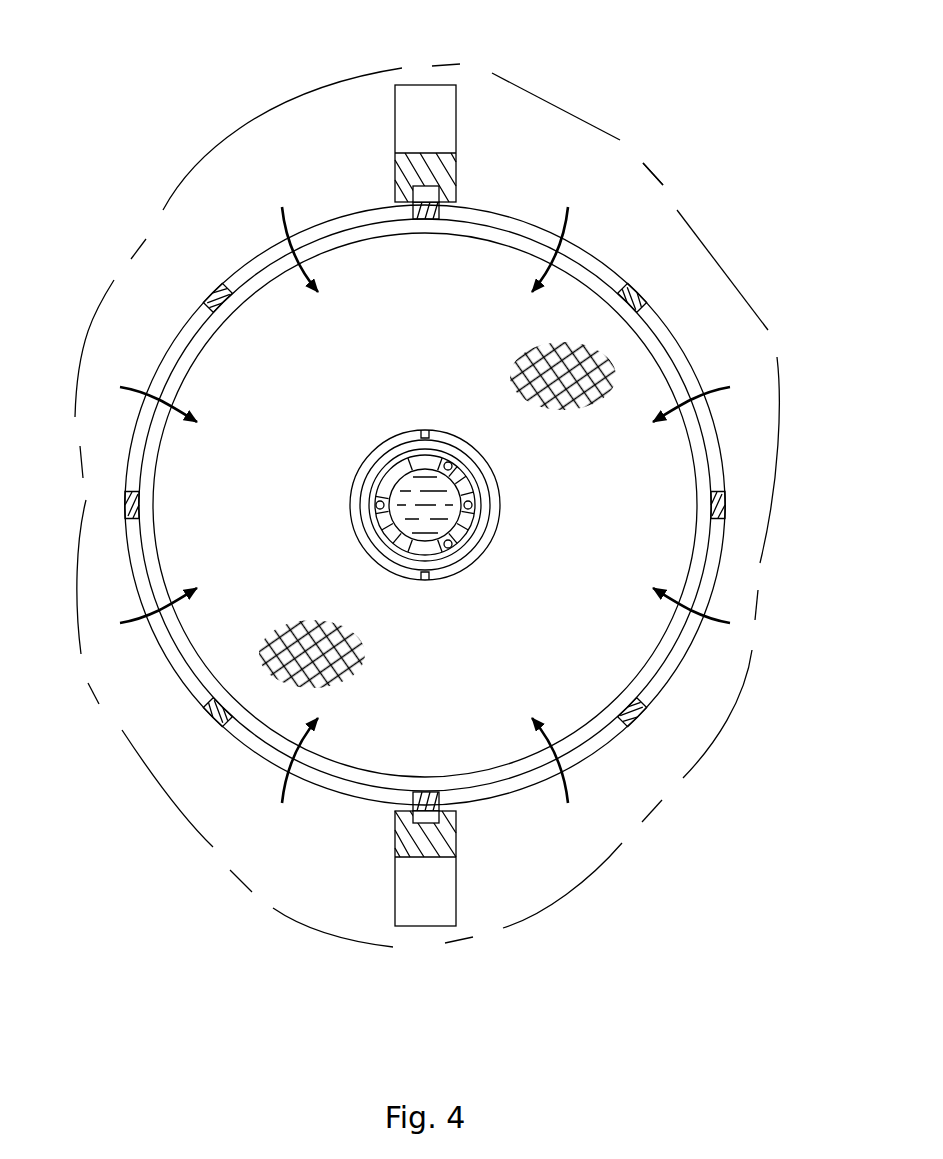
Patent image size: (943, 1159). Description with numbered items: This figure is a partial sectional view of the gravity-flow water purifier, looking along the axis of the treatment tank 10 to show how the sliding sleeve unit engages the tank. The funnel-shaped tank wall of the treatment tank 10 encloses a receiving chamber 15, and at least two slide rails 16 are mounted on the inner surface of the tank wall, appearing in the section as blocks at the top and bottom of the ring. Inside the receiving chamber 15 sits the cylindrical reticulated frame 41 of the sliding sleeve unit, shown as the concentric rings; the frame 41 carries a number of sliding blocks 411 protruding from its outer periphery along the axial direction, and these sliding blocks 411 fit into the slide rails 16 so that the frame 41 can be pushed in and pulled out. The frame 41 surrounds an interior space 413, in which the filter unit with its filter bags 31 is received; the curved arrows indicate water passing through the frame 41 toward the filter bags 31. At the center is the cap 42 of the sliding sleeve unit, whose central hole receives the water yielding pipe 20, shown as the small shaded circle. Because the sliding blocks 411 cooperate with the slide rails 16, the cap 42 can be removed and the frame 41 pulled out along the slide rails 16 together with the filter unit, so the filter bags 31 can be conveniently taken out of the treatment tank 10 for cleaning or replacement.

The treatment tank 10 is at (620, 140).
The receiving chamber 15 is at (634, 220).
The slide rails 16 is at (408, 178).
The water yielding pipe 20 is at (456, 531).
The filter bags 31 is at (283, 312).
The cylindrical reticulated frame 41 is at (642, 292).
The sliding blocks 411 is at (425, 195).
The interior space 413 is at (595, 727).
The cap 42 is at (366, 458).